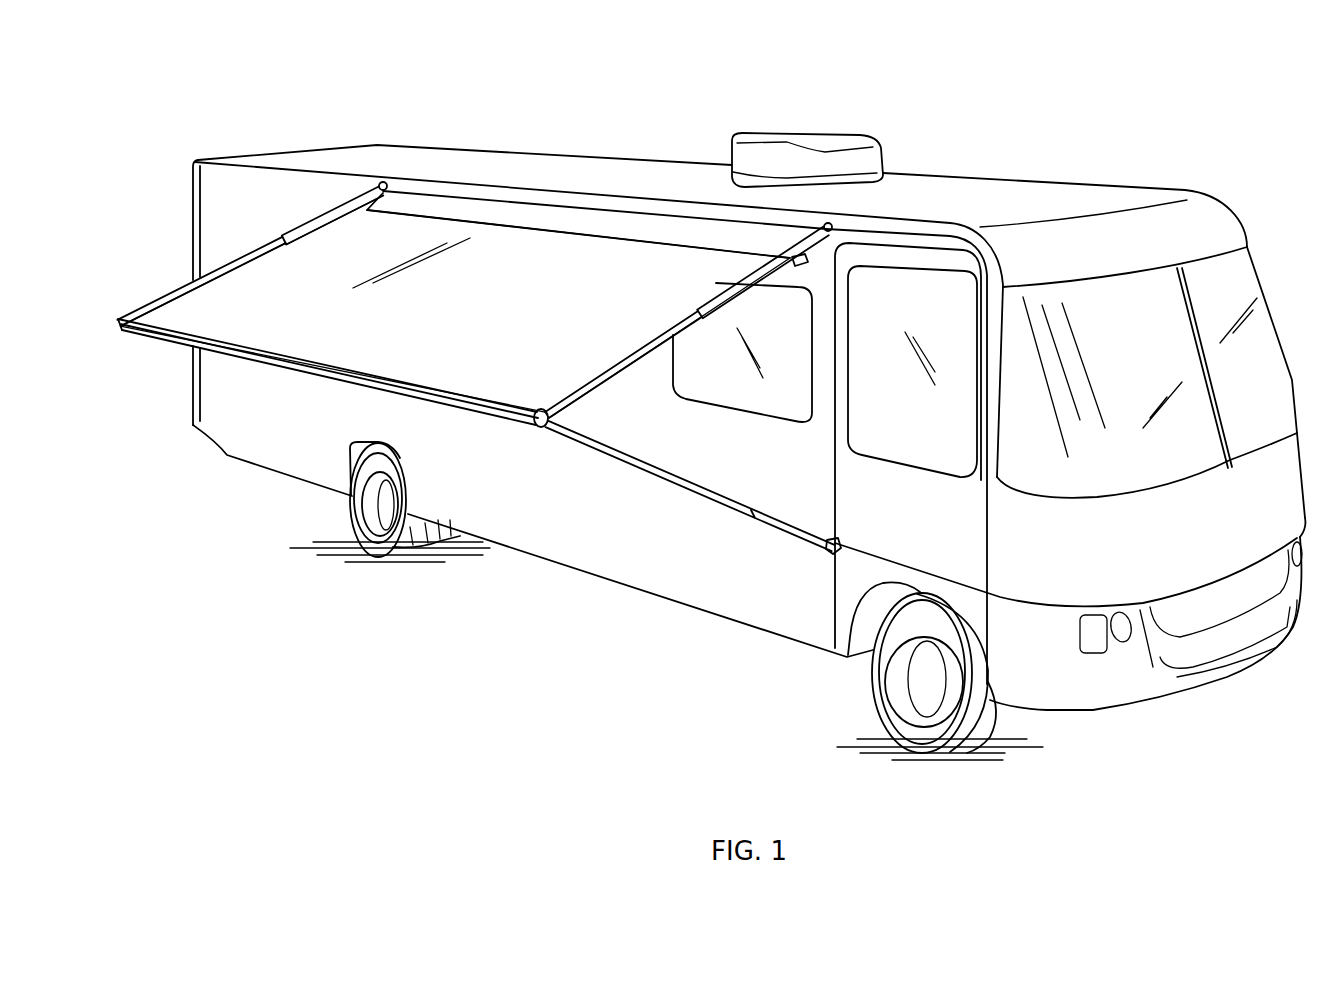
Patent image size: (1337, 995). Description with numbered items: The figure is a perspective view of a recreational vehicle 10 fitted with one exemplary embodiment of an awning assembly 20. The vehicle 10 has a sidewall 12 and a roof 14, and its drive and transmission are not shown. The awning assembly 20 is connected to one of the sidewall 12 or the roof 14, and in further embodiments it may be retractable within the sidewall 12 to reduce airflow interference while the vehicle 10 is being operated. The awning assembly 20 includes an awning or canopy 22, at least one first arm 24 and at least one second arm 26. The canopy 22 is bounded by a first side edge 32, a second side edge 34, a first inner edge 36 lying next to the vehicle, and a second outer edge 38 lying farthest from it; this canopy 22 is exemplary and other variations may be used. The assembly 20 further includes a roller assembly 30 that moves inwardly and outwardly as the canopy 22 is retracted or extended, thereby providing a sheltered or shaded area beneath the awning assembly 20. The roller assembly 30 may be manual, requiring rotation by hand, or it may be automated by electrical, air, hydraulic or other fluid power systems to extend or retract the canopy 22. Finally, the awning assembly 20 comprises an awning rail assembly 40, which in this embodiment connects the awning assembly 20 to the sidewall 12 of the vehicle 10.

The recreational vehicle 10 is at (1125, 94).
The sidewall 12 is at (620, 543).
The roof 14 is at (978, 186).
The awning assembly 20 is at (155, 272).
The awning or canopy 22 is at (500, 255).
The first arm 24 is at (272, 237).
The second arm 26 is at (617, 372).
The roller assembly 30 is at (305, 373).
The first side edge 32 is at (267, 254).
The second side edge 34 is at (643, 346).
The first inner edge 36 is at (571, 251).
The second outer edge 38 is at (388, 358).
The awning rail assembly 40 is at (835, 240).